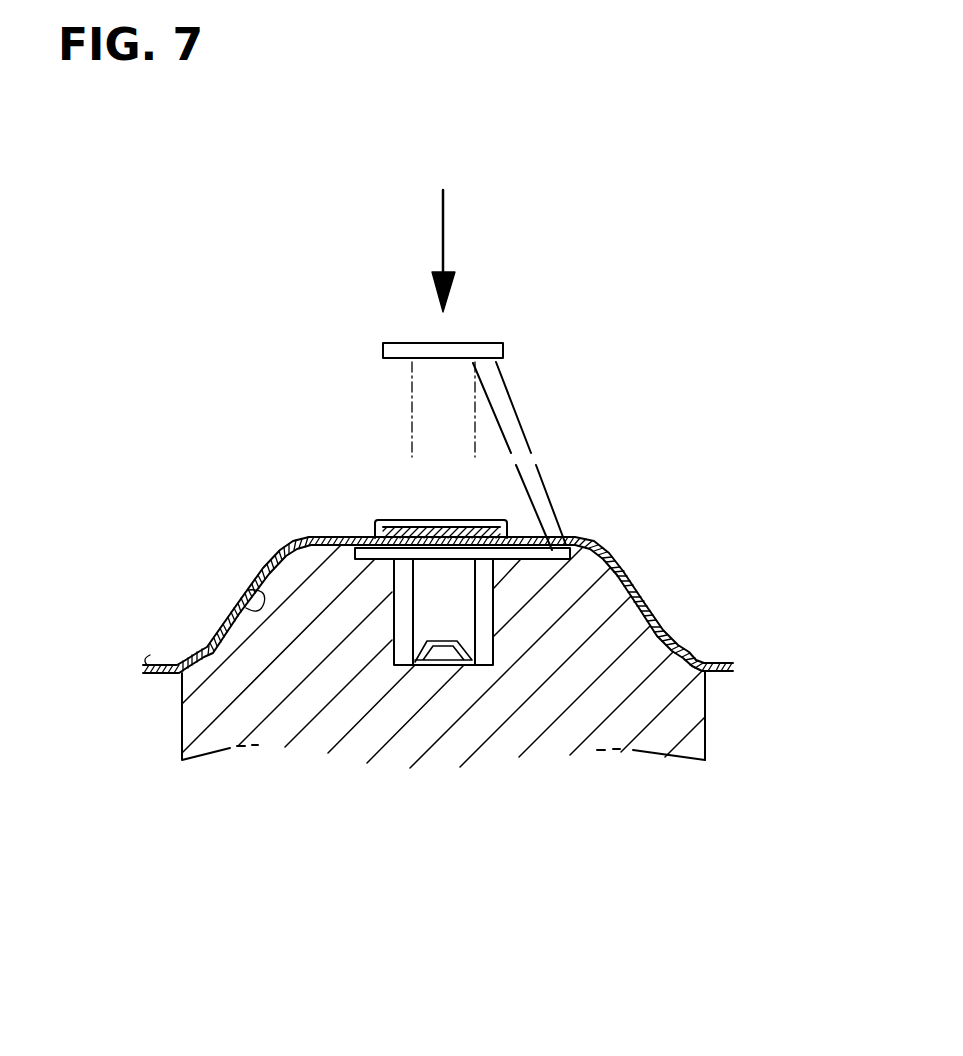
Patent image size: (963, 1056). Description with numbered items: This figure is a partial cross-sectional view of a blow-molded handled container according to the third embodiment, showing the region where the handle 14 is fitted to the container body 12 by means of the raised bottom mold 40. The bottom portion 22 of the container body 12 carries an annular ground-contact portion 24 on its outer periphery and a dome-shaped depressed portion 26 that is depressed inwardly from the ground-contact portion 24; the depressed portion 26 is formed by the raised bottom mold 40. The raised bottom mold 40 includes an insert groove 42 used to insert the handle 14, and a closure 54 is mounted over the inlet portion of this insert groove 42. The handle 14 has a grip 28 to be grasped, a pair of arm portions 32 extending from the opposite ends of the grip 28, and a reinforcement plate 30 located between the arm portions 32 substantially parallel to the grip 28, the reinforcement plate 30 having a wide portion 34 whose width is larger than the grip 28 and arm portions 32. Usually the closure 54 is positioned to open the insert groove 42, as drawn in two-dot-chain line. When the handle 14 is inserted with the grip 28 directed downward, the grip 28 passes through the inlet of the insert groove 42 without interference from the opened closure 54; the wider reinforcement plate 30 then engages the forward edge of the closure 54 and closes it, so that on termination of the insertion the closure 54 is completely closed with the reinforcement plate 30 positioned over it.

The container body 12 is at (430, 676).
The handle 14 is at (592, 541).
The bottom portion 22 is at (730, 697).
The ground-contact portion 24 is at (160, 680).
The depressed portion 26 is at (230, 602).
The grip 28 is at (423, 667).
The reinforcement plate 30 is at (429, 507).
The arm portions 32 is at (430, 598).
The wide portion 34 is at (497, 343).
The raised bottom mold 40 is at (530, 727).
The insert groove 42 is at (480, 586).
The closure 54 is at (525, 397).